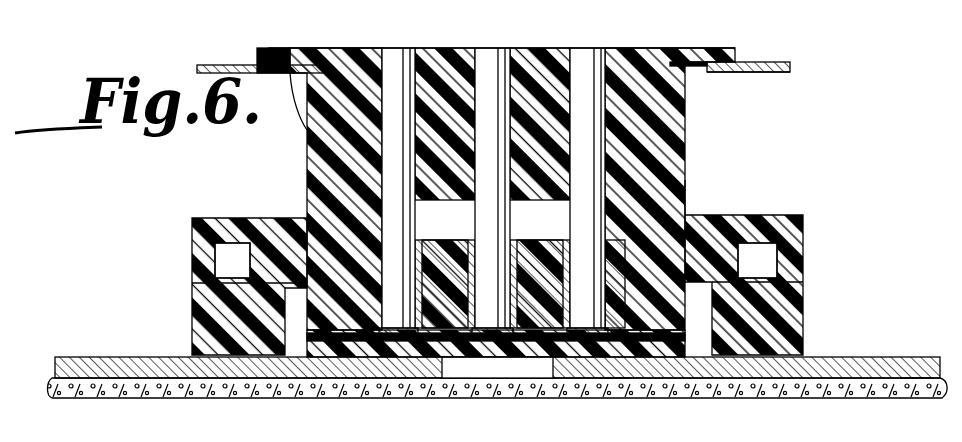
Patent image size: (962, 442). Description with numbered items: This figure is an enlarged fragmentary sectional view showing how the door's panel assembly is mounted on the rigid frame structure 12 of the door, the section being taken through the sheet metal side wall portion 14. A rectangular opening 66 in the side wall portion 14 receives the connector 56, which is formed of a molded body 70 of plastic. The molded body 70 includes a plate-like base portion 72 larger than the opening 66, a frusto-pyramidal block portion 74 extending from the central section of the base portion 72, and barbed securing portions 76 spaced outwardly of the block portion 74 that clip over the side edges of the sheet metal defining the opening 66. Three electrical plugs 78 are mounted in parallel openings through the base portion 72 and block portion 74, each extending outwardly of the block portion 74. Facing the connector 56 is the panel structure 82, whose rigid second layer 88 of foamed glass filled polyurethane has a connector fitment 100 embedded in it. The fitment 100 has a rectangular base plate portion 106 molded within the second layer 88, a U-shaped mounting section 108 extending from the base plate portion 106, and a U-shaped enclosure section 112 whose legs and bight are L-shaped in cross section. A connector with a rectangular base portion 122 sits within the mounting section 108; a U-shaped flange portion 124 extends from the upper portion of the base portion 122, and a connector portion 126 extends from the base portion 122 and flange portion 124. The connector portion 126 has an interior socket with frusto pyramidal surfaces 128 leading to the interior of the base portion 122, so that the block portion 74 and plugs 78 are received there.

The main rigid frame structure 12 is at (795, 67).
The side wall portion 14 is at (776, 74).
The connector 56 is at (740, 48).
The opening 66 is at (690, 78).
The molded body 70 is at (307, 122).
The plate-like base portion 72 is at (270, 48).
The block portion 74 is at (307, 166).
The securing portions 76 is at (290, 100).
The electrical plugs 78 is at (487, 52).
The panel structure 82 is at (110, 405).
The second layer 88 is at (853, 396).
The connector fitment 100 is at (190, 318).
The base plate portion 106 is at (94, 360).
The U-shaped mounting section 108 is at (790, 312).
The U-shaped enclosure section 112 is at (766, 216).
The rectangular base portion 122 is at (615, 396).
The U-shaped flange portion 124 is at (220, 224).
The connector portion 126 is at (676, 186).
The frusto pyramidal surfaces 128 is at (660, 216).